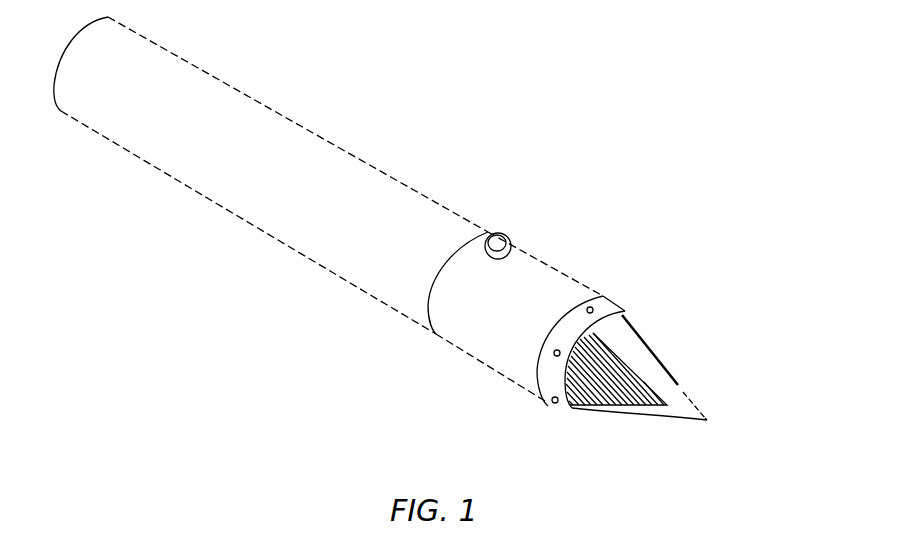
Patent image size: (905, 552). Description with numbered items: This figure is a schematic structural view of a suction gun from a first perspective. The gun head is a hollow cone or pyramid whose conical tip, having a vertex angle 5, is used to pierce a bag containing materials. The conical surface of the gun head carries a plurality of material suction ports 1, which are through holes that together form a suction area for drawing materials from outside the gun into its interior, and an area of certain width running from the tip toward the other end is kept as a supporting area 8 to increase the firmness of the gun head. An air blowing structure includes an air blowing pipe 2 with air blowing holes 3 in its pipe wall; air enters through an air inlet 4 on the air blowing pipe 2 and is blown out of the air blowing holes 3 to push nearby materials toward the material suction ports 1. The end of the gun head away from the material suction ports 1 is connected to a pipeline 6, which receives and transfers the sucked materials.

The material suction port 1 is at (573, 405).
The air blowing pipe 2 is at (560, 282).
The air blowing hole 3 is at (600, 307).
The air inlet 4 is at (503, 234).
The vertex angle 5 is at (707, 418).
The pipeline 6 is at (200, 124).
The supporting area 8 is at (678, 390).